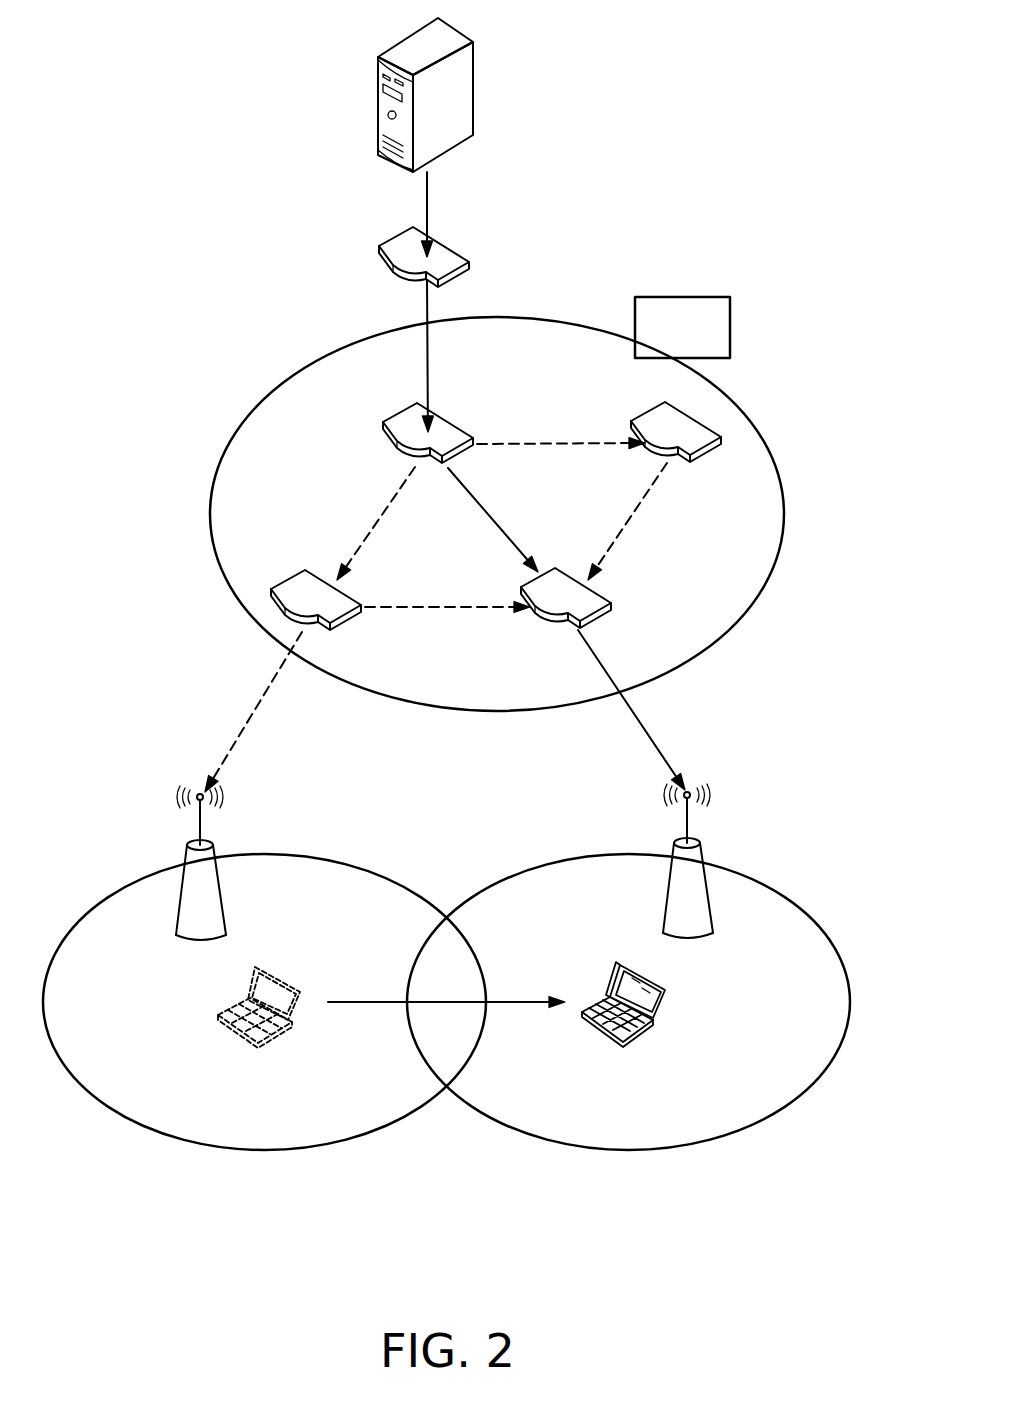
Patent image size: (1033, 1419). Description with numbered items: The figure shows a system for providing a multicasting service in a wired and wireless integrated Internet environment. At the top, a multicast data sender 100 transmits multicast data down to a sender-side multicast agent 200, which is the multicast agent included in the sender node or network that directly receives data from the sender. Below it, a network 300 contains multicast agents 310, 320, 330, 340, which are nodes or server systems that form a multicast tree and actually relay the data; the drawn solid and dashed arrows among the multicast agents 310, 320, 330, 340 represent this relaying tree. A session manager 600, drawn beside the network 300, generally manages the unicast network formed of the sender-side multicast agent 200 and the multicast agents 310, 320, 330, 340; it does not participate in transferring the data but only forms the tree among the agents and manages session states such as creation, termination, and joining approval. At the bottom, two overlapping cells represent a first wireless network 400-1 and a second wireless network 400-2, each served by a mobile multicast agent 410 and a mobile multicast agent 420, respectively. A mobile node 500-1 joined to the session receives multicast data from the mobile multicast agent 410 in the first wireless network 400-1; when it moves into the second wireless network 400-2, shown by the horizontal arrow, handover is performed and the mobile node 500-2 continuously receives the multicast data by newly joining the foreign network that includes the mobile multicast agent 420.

The multicast data sender 100 is at (475, 67).
The sender-side multicast agent 200 is at (472, 263).
The network 300 is at (335, 348).
The multicast agent 310 is at (448, 422).
The multicast agent 320 is at (350, 590).
The multicast agent 330 is at (547, 563).
The multicast agent 340 is at (690, 468).
The first wireless network 400-1 is at (265, 1152).
The second wireless network 400-2 is at (622, 1152).
The mobile multicast agent 410 is at (190, 842).
The mobile multicast agent 420 is at (705, 838).
The mobile node 500-1 is at (280, 1035).
The mobile node 500-2 is at (645, 1035).
The session manager 600 is at (682, 297).